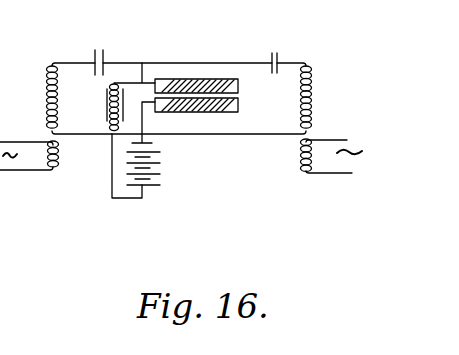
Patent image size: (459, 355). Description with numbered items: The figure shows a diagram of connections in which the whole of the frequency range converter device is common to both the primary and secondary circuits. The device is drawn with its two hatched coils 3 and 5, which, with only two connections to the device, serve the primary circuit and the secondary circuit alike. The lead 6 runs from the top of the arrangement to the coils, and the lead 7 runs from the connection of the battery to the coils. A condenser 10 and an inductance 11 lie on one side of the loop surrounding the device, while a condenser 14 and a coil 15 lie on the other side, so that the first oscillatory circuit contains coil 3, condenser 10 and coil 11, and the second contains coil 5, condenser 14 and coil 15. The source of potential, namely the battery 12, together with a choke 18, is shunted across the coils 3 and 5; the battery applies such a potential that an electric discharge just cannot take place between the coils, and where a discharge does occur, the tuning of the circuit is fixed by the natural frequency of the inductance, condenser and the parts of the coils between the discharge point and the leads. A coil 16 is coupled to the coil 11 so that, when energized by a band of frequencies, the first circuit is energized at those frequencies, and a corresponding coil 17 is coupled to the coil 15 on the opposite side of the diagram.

The coil 3 is at (238, 85).
The coil 5 is at (238, 105).
The lead 6 is at (143, 76).
The lead 7 is at (142, 125).
The condenser 10 is at (95, 54).
The inductance 11 is at (46, 99).
The battery 12 is at (158, 165).
The condenser 14 is at (280, 59).
The coil 15 is at (313, 97).
The coil 16 is at (60, 155).
The coupling coil 17 is at (298, 155).
The choke 18 is at (106, 107).